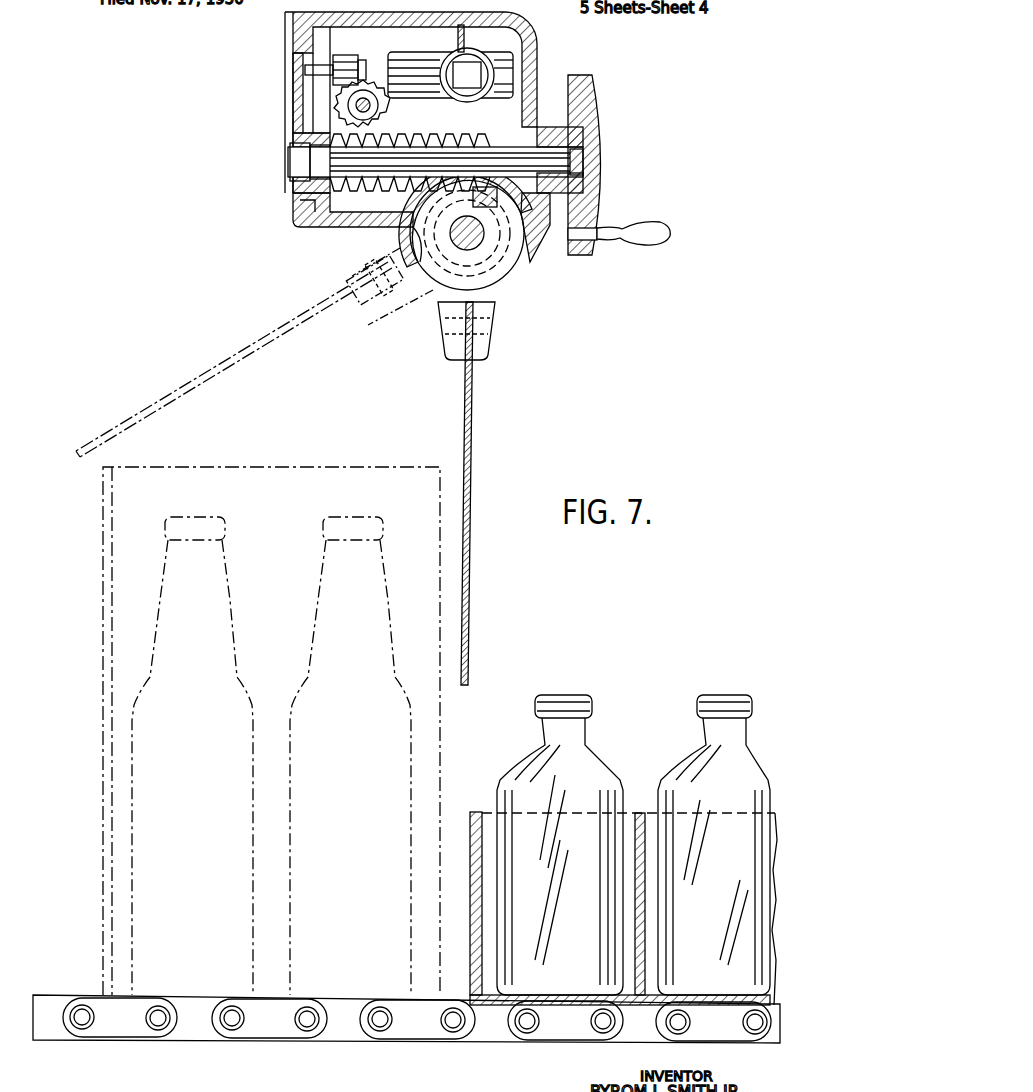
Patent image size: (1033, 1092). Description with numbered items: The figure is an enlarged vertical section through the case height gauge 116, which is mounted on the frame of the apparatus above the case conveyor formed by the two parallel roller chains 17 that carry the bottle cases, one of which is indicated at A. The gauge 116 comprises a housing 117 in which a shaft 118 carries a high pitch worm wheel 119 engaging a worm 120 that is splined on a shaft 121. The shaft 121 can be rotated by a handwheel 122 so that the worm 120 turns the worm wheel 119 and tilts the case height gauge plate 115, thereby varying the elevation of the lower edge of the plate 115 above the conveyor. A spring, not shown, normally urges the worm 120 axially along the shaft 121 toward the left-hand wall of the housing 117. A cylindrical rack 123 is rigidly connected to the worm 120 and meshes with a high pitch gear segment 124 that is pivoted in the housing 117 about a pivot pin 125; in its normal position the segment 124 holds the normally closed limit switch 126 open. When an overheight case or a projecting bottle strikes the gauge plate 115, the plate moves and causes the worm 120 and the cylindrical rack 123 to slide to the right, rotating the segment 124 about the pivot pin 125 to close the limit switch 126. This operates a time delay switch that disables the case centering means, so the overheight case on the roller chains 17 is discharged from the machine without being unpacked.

The roller chains 17 is at (88, 998).
The bottle case A is at (102, 607).
The case height gauge plate 115 is at (210, 383).
The case height gauge 116 is at (305, 234).
The housing 117 is at (528, 34).
The shaft 118 is at (452, 227).
The high pitch worm wheel 119 is at (503, 253).
The worm 120 is at (413, 187).
The shaft 121 is at (507, 153).
The handwheel 122 is at (603, 167).
The cylindrical rack 123 is at (300, 207).
The high pitch gear segment 124 is at (337, 118).
The pivot pin 125 is at (363, 103).
The limit switch 126 is at (402, 90).